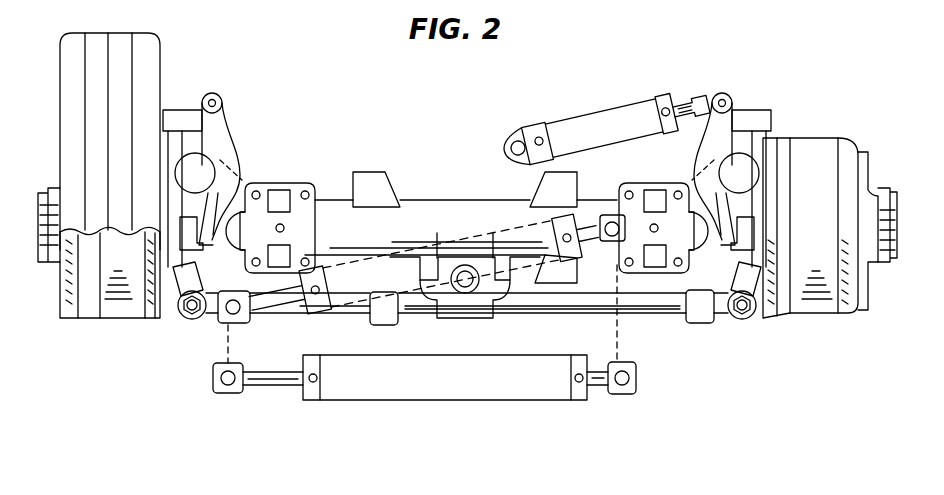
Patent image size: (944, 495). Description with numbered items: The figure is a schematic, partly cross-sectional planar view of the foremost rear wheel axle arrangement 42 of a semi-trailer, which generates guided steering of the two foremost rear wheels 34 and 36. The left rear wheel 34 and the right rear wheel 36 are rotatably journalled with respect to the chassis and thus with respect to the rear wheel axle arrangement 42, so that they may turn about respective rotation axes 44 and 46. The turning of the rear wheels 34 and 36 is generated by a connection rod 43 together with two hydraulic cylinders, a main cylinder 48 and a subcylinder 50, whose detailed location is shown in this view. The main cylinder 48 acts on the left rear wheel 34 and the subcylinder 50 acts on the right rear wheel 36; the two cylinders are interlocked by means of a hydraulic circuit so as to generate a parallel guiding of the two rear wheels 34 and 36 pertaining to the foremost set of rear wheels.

The left rear wheel 34 is at (118, 306).
The right rear wheel 36 is at (816, 306).
The rear wheel axle arrangement 42 is at (446, 186).
The connection rod 43 is at (668, 300).
The rotation axis 44 is at (200, 167).
The rotation axis 46 is at (748, 168).
The main cylinder 48 is at (452, 380).
The subcylinder 50 is at (617, 107).